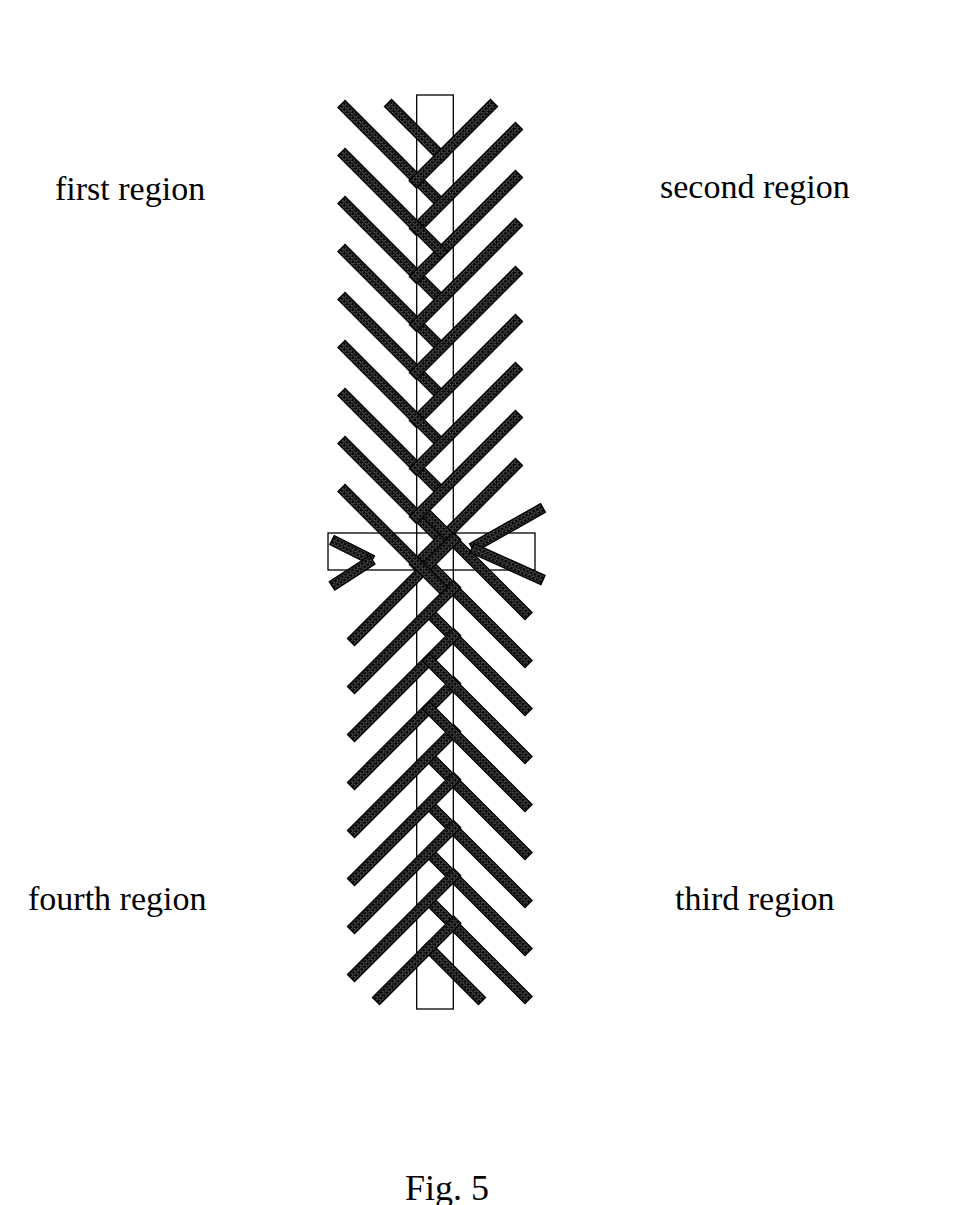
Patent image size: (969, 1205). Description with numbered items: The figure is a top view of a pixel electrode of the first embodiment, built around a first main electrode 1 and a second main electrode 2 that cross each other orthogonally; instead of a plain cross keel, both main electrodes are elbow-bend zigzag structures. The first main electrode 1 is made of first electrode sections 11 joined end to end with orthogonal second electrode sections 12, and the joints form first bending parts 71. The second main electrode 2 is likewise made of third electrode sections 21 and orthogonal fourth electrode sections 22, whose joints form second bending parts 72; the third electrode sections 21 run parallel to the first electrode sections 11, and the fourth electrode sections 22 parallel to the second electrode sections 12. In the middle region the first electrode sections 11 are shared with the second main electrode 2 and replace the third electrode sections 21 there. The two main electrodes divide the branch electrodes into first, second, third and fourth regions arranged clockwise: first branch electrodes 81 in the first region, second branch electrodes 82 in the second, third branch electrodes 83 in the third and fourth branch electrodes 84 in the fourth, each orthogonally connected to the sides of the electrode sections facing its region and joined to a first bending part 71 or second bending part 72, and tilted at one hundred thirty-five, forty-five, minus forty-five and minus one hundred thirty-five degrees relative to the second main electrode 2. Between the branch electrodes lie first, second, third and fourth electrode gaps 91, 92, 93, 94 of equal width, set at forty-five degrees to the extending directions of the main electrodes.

The first main electrode 1 is at (433, 93).
The second main electrode 2 is at (537, 550).
The first electrode sections 11 is at (415, 172).
The second electrode sections 12 is at (432, 217).
The first bending parts 71 is at (415, 220).
The second bending parts 72 is at (383, 533).
The first branch electrodes 81 is at (345, 392).
The second branch electrodes 82 is at (517, 418).
The third branch electrodes 83 is at (517, 752).
The fourth branch electrodes 84 is at (348, 739).
The first electrode gaps 91 is at (387, 358).
The second electrode gaps 92 is at (490, 418).
The third electrode gaps 93 is at (485, 745).
The fourth electrode gaps 94 is at (375, 760).
The third electrode sections 21 is at (398, 543).
The fourth electrode sections 22 is at (410, 543).